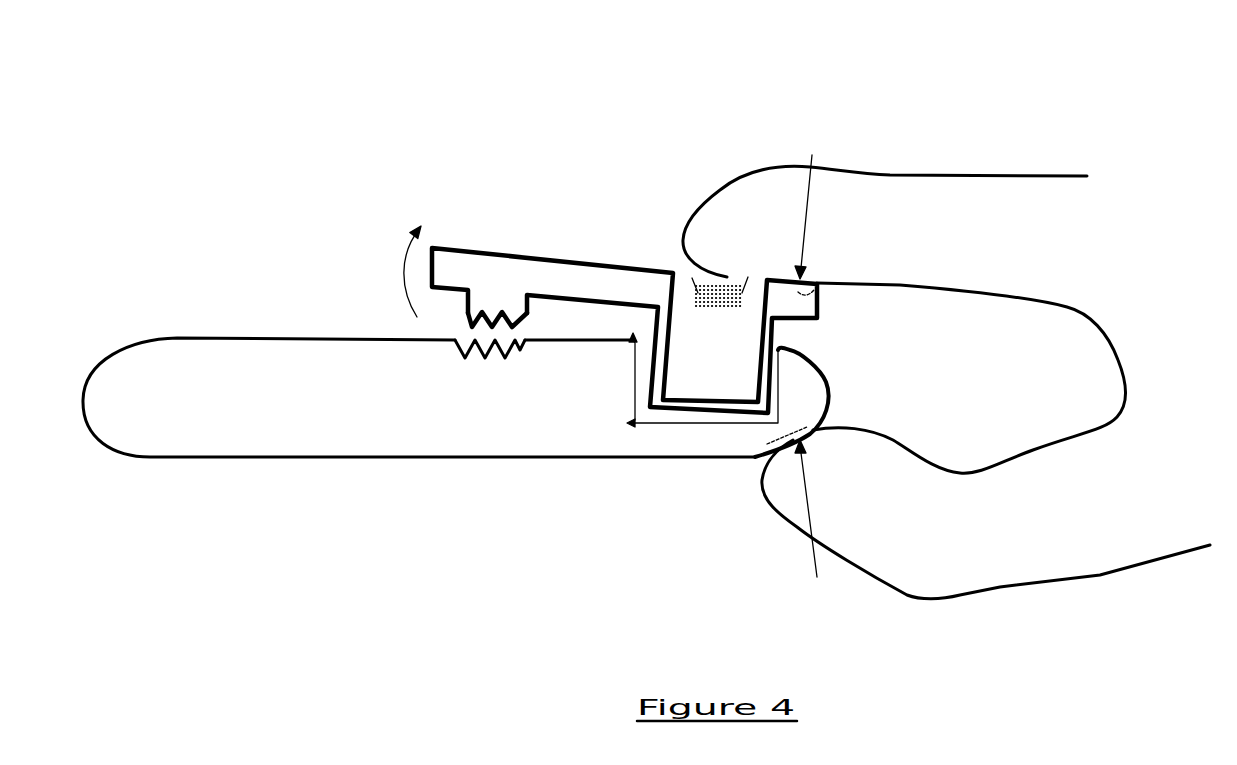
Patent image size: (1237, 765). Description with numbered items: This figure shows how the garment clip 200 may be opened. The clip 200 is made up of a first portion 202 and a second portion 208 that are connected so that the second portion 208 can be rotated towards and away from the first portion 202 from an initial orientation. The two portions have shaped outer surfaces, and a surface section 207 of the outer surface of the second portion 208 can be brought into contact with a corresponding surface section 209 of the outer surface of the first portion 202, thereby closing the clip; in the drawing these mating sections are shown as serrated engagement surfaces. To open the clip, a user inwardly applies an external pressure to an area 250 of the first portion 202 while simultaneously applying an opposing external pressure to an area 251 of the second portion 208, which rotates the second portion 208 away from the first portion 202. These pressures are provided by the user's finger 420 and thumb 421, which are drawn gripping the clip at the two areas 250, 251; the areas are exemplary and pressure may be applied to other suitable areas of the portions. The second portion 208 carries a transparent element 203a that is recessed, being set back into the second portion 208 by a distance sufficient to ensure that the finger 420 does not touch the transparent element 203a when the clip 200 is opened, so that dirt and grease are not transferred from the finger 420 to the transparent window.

The clip 200 is at (290, 212).
The first portion 202 is at (213, 446).
The transparent element 203a is at (718, 287).
The surface section 207 is at (497, 310).
The second portion 208 is at (617, 267).
The serrated engagement portion of body 209 is at (490, 352).
The area 250 is at (817, 312).
The area 251 is at (820, 373).
The finger 420 is at (793, 167).
The thumb 421 is at (777, 513).